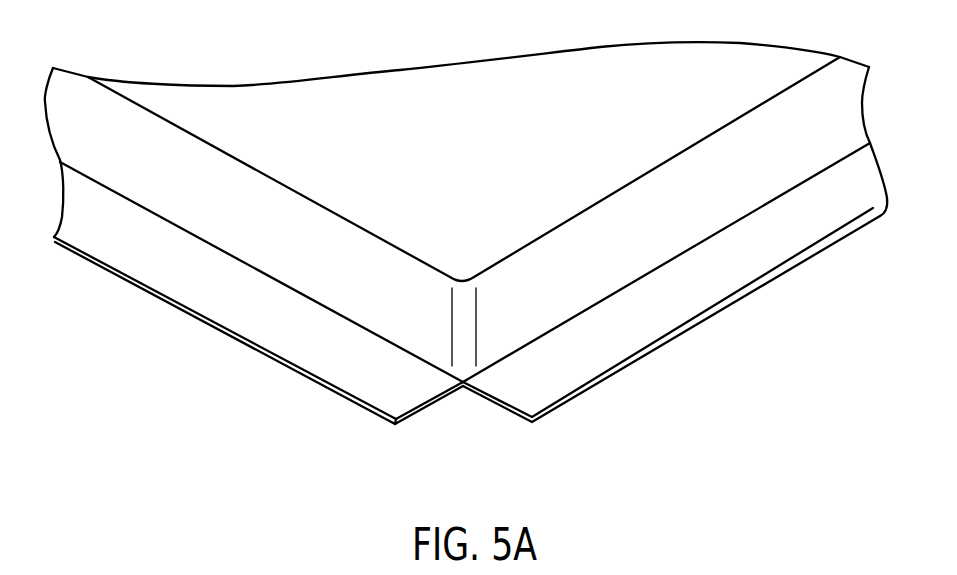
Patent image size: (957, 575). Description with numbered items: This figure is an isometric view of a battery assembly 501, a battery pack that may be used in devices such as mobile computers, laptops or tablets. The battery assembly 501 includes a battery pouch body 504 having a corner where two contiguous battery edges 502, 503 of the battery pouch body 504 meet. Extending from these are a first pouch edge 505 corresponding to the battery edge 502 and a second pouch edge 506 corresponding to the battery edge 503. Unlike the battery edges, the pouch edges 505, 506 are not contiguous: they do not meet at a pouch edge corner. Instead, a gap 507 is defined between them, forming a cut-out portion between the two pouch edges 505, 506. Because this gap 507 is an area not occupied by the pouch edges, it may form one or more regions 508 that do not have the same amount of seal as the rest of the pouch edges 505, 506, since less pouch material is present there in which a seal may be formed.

The battery assembly 501 is at (624, 413).
The battery edge 502 is at (705, 227).
The battery edge 503 is at (323, 292).
The battery pouch body 504 is at (484, 73).
The first pouch edge 505 is at (682, 317).
The second pouch edge 506 is at (363, 390).
The gap 507 is at (441, 419).
The regions 508 is at (464, 385).